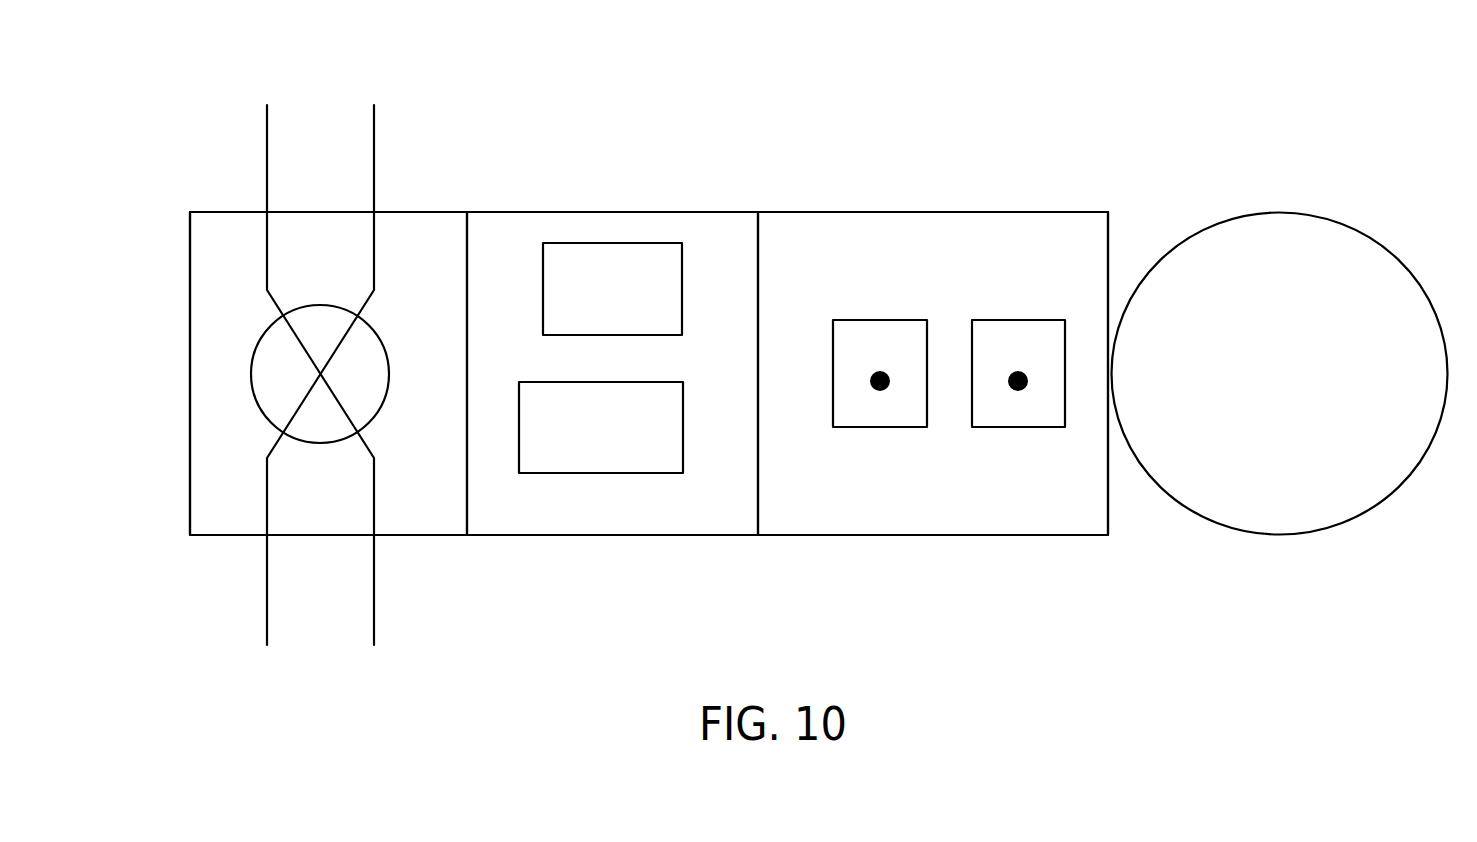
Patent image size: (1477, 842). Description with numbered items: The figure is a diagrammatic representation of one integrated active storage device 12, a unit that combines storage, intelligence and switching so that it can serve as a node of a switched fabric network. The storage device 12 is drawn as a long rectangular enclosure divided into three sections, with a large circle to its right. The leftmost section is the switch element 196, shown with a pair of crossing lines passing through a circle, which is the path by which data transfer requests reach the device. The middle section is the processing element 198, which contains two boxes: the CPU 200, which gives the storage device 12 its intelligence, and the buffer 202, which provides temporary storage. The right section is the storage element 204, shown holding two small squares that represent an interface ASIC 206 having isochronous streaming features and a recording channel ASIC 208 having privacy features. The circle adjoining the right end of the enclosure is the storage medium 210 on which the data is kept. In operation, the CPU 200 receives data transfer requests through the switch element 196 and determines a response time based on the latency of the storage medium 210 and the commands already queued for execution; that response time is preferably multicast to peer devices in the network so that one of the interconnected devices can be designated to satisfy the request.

The storage device 12 is at (604, 108).
The switch element 196 is at (196, 247).
The processing element 198 is at (527, 232).
The CPU 200 is at (638, 253).
The buffer 202 is at (643, 463).
The storage element 204 is at (799, 235).
The interface ASIC 206 is at (870, 320).
The recording channel ASIC 208 is at (1032, 414).
The storage medium 210 is at (1253, 232).